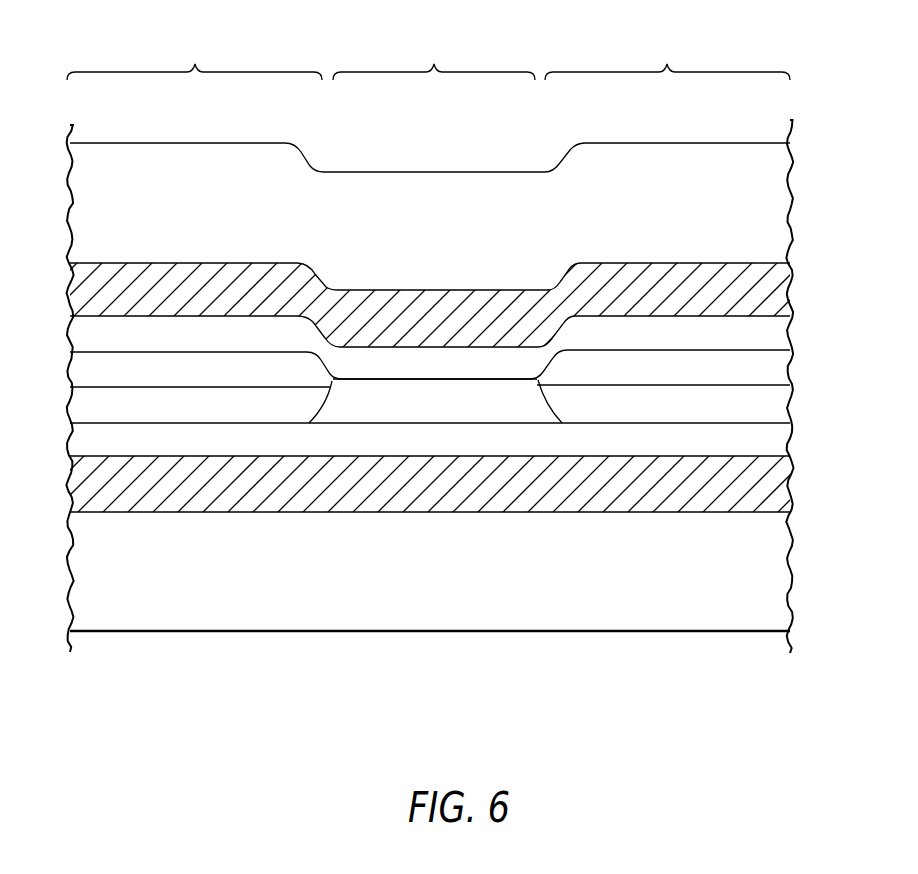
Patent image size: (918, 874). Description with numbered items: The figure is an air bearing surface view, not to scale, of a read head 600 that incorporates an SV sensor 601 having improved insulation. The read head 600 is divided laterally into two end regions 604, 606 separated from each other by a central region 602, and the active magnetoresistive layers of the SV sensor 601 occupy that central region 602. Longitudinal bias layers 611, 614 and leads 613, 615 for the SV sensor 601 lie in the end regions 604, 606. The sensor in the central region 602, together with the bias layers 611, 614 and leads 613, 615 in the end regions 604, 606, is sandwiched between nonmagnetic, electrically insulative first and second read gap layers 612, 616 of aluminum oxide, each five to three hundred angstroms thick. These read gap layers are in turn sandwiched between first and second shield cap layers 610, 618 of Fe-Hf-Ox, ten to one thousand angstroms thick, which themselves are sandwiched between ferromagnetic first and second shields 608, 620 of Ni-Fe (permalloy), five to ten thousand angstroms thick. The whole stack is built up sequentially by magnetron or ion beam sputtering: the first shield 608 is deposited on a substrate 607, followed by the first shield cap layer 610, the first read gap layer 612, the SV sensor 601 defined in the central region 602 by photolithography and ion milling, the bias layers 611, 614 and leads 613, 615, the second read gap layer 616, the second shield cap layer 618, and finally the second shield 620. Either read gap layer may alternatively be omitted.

The read head 600 is at (645, 712).
The SV sensor 601 is at (458, 412).
The central region 602 is at (434, 56).
The end region 604 is at (194, 56).
The end region 606 is at (667, 56).
The substrate 607 is at (792, 646).
The first shield 608 is at (792, 586).
The first shield cap layer 610 is at (792, 481).
The longitudinal bias layer 611 is at (70, 412).
The first read gap layer 612 is at (792, 437).
The lead 613 is at (70, 366).
The longitudinal bias layer 614 is at (792, 402).
The lead 615 is at (792, 367).
The second read gap layer 616 is at (792, 332).
The second shield cap layer 618 is at (792, 288).
The second shield 620 is at (792, 195).